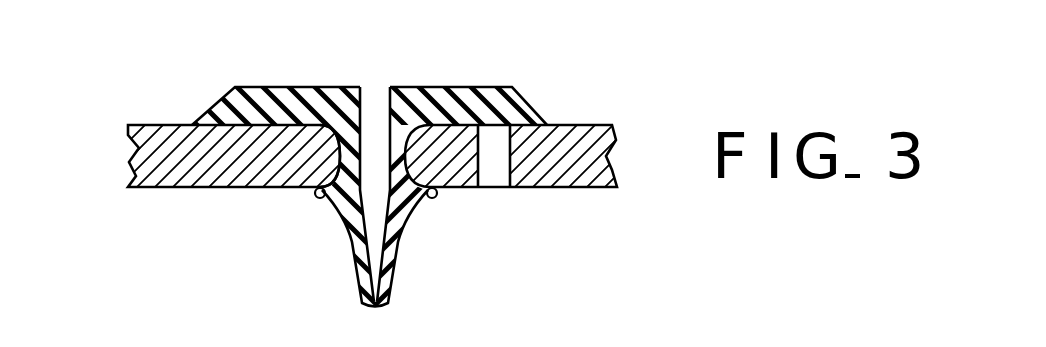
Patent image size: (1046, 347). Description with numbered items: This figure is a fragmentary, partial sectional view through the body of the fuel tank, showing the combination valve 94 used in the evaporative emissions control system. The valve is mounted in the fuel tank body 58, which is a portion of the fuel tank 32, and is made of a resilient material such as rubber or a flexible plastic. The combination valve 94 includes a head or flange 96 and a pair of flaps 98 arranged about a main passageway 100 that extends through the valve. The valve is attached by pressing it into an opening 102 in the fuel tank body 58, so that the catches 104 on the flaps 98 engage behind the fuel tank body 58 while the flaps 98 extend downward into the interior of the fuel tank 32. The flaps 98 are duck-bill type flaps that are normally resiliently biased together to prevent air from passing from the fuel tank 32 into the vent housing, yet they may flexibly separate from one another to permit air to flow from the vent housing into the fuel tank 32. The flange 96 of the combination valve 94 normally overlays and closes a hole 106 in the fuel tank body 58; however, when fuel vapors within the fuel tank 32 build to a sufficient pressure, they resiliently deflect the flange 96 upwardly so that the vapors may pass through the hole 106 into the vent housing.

The combination valve 94 is at (454, 160).
The fuel tank body 58 is at (172, 138).
The fuel tank 32 is at (568, 130).
The head or flange 96 is at (470, 100).
The main passageway 100 is at (368, 92).
The opening 102 is at (292, 192).
The catches 104 is at (322, 200).
The flaps 98 is at (348, 278).
The hole 106 is at (500, 168).